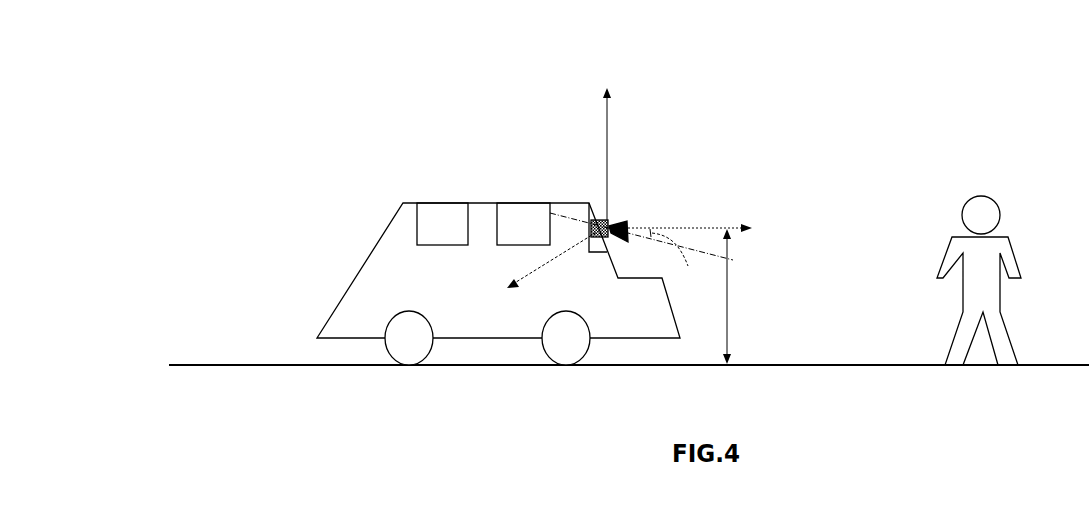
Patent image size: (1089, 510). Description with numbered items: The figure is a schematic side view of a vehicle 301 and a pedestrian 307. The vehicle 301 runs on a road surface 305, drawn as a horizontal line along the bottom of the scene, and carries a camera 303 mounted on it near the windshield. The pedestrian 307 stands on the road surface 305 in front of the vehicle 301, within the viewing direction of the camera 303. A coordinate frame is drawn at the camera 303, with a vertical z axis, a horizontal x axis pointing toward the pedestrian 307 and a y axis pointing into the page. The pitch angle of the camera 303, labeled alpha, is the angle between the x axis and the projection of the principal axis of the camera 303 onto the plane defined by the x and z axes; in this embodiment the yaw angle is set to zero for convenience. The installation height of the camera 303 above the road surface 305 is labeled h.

The vehicle 301 is at (485, 208).
The camera 303 is at (610, 224).
The road surface 305 is at (850, 363).
The pedestrian 307 is at (962, 245).